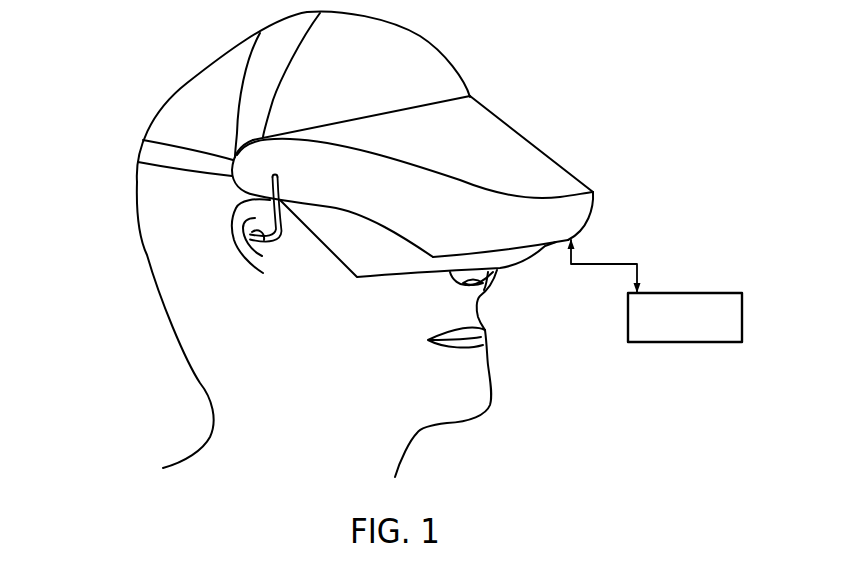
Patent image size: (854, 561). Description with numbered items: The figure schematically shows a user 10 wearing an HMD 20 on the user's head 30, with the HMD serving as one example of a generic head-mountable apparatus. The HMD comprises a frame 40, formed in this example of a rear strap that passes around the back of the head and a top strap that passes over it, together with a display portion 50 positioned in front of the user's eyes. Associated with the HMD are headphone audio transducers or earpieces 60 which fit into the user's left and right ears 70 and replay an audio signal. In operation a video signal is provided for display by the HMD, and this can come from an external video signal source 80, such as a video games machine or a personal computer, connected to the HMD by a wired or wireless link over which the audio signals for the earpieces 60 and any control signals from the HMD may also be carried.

The user 10 is at (118, 323).
The HMD 20 is at (543, 133).
The head 30 is at (147, 220).
The frame 40 is at (140, 147).
The display portion 50 is at (577, 175).
The earpieces 60 is at (280, 240).
The ears 70 is at (233, 217).
The external video signal source 80 is at (718, 292).